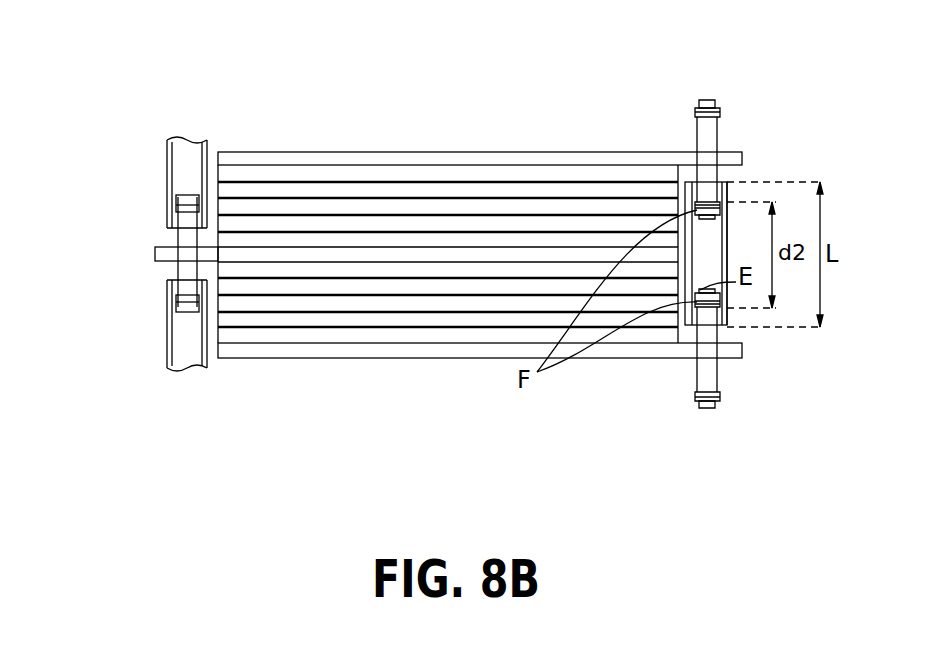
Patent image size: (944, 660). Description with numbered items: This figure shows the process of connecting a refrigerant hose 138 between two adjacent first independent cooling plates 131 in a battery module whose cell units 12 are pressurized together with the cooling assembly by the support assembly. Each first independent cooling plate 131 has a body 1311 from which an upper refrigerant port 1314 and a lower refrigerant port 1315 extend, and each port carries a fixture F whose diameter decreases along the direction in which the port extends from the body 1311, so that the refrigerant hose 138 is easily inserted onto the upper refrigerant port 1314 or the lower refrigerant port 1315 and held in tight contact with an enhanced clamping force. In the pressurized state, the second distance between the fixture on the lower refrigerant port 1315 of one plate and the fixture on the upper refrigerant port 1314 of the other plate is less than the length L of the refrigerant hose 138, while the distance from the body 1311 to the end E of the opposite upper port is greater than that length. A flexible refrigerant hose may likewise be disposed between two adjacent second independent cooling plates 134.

The cell unit 12 is at (295, 247).
The first independent cooling plate 131 is at (505, 256).
The body 1311 is at (450, 160).
The upper refrigerant port 1314 is at (700, 133).
The lower refrigerant port 1315 is at (700, 183).
The refrigerant hose 138 is at (759, 227).
The second independent cooling plate 134 is at (155, 253).